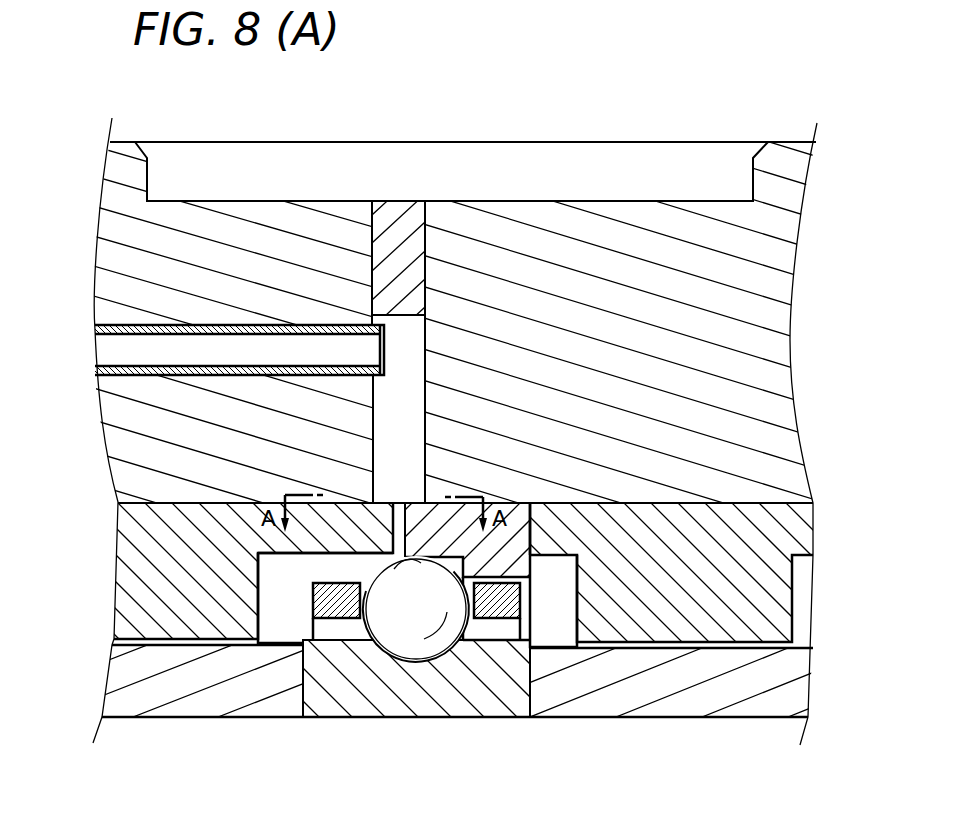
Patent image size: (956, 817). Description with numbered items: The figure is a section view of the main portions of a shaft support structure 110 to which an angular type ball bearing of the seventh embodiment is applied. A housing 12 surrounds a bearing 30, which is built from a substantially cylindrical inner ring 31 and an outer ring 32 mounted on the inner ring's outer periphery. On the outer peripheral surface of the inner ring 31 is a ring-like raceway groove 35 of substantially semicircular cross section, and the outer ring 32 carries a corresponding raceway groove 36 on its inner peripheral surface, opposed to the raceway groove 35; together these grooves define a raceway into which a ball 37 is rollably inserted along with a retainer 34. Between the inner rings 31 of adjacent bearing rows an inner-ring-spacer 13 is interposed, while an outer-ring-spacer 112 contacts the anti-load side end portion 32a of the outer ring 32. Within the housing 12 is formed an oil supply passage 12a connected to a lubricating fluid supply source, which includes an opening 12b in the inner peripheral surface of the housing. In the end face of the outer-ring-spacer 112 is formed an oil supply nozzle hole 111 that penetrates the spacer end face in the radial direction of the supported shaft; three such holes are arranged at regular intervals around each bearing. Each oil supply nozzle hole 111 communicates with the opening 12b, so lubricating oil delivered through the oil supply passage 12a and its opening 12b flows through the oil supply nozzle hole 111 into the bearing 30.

The shaft support structure 110 is at (541, 176).
The housing 12 is at (745, 342).
The oil supply passage 12a is at (385, 440).
The opening 12b is at (363, 503).
The bearing 30 is at (522, 486).
The outer-ring-spacer 112 is at (152, 543).
The anti-load side end portion 32a is at (397, 502).
The outer ring 32 is at (503, 550).
The inner ring 31 is at (410, 712).
The inner-ring-spacer 13 is at (253, 710).
The oil supply nozzle hole 111 is at (327, 557).
The retainer 34 is at (313, 600).
The ball 37 is at (402, 627).
The raceway groove 35 is at (428, 664).
The raceway groove 36 is at (393, 562).